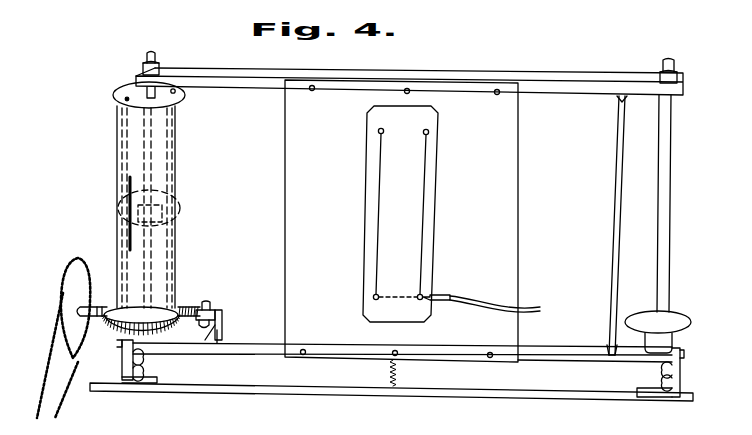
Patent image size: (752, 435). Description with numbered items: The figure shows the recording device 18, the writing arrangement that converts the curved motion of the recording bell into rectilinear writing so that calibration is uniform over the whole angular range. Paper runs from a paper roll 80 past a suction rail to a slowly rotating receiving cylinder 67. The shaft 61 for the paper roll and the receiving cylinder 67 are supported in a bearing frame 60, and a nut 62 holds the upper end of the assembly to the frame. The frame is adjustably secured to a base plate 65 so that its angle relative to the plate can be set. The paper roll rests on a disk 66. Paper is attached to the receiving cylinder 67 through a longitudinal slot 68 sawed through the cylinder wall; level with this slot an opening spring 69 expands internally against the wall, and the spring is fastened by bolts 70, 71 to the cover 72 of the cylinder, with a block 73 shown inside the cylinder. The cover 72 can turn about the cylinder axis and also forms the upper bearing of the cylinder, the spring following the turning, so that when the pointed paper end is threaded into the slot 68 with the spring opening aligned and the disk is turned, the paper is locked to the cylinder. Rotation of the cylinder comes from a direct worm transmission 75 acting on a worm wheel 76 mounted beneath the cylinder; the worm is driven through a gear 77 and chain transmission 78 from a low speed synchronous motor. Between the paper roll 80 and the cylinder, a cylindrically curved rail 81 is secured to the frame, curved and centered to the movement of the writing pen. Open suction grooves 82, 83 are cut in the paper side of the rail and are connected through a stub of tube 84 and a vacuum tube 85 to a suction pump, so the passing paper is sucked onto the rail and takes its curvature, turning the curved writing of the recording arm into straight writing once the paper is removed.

The recording device 18 is at (432, 73).
The bearing frame 60 is at (305, 80).
The paper roll shaft 61 is at (666, 135).
The nut 62 is at (155, 59).
The base plate 65 is at (253, 392).
The disk 66 is at (667, 316).
The receiving cylinder 67 is at (163, 247).
The longitudinal slot 68 is at (127, 238).
The opening spring 69 is at (173, 197).
The bolt 70 is at (118, 146).
The bolt 71 is at (177, 133).
The cover 72 is at (182, 98).
The piston block 73 is at (173, 217).
The worm transmission 75 is at (187, 306).
The worm wheel 76 is at (111, 336).
The gear 77 is at (77, 288).
The chain transmission 78 is at (65, 408).
The paper roll 80 is at (435, 187).
The cylindrically curved rail 81 is at (385, 137).
The suction groove 82 is at (378, 231).
The suction groove 83 is at (425, 218).
The stub of tube 84 is at (438, 295).
The vacuum tube 85 is at (492, 303).